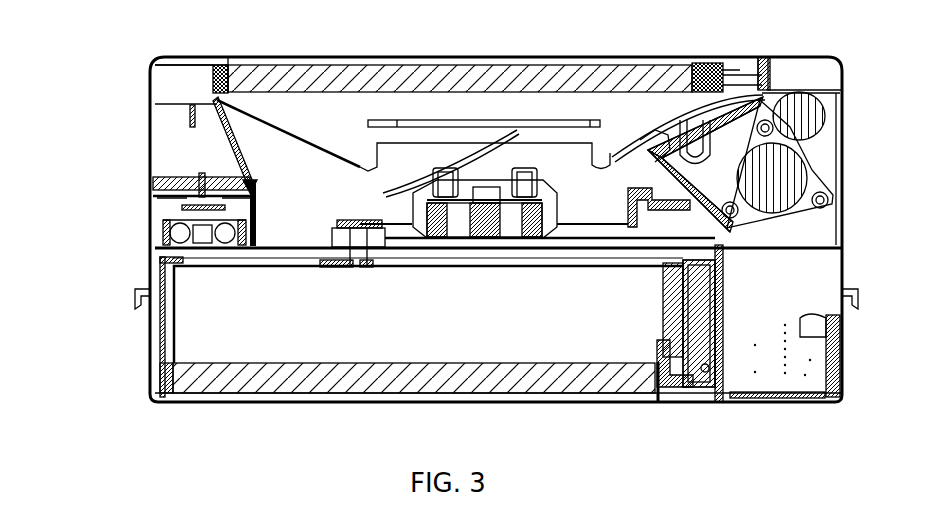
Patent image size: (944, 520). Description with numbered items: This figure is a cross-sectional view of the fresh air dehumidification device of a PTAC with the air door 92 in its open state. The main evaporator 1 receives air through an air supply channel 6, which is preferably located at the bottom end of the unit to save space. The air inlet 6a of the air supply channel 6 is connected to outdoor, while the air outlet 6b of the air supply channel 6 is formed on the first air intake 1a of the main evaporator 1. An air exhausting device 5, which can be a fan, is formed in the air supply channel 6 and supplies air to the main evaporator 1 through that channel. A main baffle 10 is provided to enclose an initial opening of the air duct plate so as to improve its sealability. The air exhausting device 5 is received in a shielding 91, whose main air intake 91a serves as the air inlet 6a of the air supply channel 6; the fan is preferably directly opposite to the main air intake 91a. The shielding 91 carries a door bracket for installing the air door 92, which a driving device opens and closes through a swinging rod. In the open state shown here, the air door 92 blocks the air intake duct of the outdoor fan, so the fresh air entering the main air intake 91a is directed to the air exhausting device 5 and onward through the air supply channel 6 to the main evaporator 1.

The main evaporator 1 is at (312, 370).
The first air intake 1a is at (240, 365).
The air exhausting device 5 is at (172, 253).
The air supply channel 6 is at (185, 148).
The air inlet 6a is at (190, 91).
The air outlet 6b is at (163, 300).
The main baffle 10 is at (247, 258).
The shielding 91 is at (167, 129).
The main air intake 91a is at (167, 127).
The air door 92 is at (235, 108).